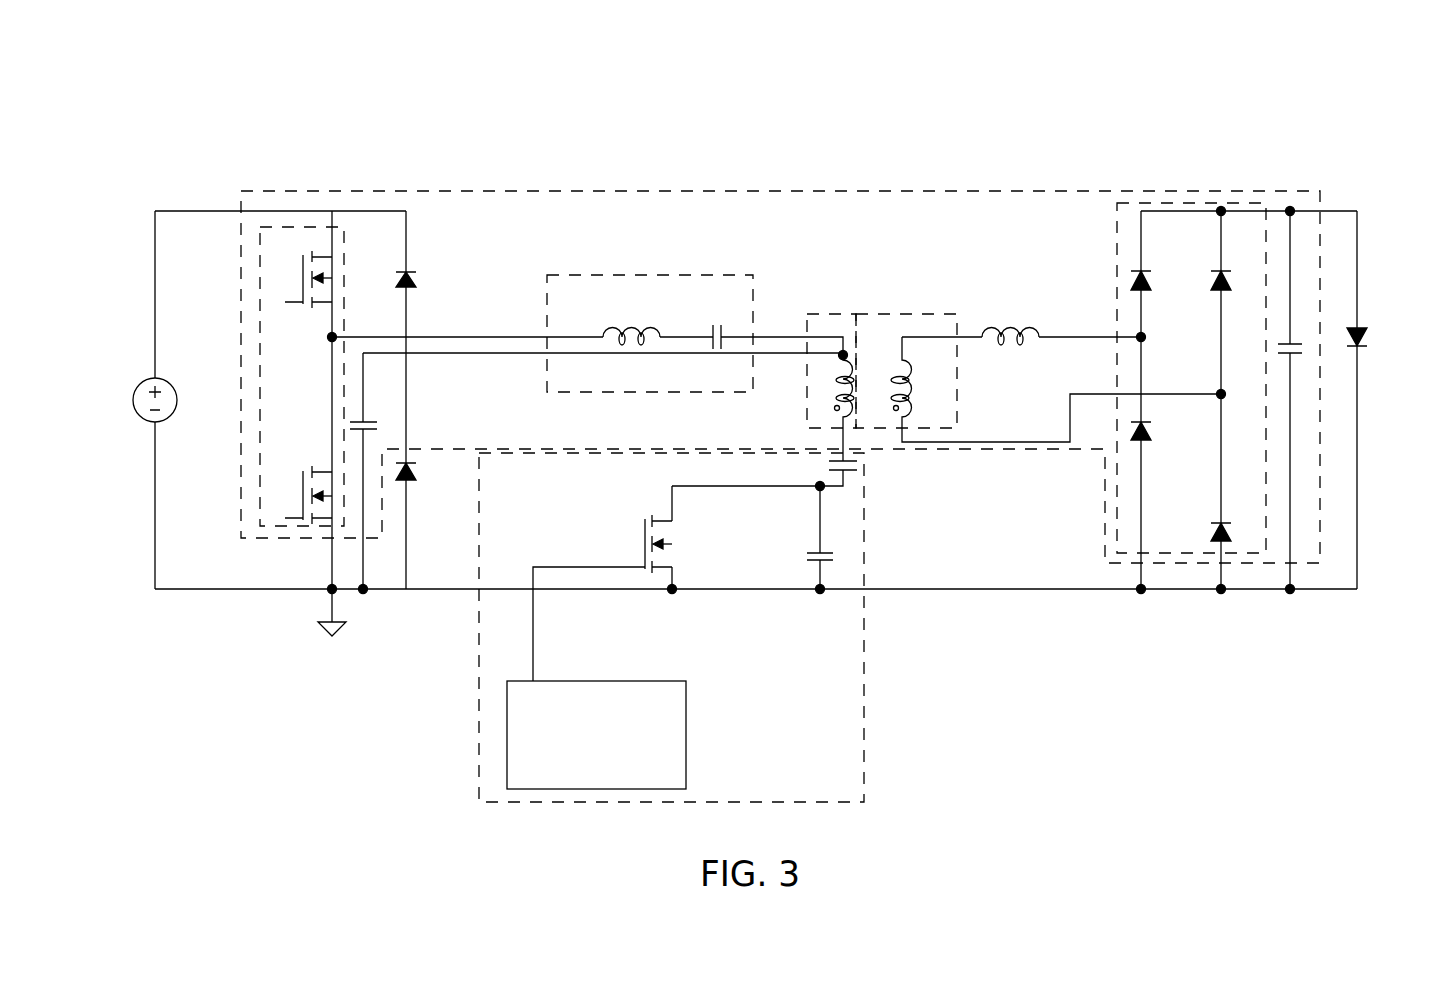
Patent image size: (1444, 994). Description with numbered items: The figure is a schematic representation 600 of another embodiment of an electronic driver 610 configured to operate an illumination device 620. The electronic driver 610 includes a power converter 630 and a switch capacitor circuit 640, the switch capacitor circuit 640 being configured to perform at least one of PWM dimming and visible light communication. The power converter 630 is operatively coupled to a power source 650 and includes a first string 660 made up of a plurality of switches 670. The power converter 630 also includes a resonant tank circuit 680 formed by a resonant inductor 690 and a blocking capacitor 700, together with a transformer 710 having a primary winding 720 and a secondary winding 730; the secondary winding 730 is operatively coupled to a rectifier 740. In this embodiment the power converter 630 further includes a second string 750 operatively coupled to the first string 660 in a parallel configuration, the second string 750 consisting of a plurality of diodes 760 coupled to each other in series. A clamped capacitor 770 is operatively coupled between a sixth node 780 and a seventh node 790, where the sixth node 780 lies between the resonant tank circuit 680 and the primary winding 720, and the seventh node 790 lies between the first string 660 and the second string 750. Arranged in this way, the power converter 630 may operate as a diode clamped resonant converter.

The schematic representation 600 is at (938, 118).
The electronic driver 610 is at (212, 175).
The illumination device 620 is at (1362, 328).
The power converter 630 is at (425, 190).
The switch capacitor circuit 640 is at (864, 714).
The power source 650 is at (170, 382).
The first string 660 is at (273, 227).
The switches 670 is at (330, 397).
The resonant tank circuit 680 is at (617, 275).
The resonant inductor 690 is at (617, 325).
The blocking capacitor 700 is at (712, 328).
The transformer 710 is at (947, 313).
The primary winding 720 is at (837, 396).
The secondary winding 730 is at (903, 382).
The rectifier 740 is at (1116, 224).
The second string 750 is at (408, 238).
The diodes 760 is at (417, 280).
The clamped capacitor 770 is at (376, 415).
The sixth node 780 is at (848, 346).
The seventh node 790 is at (365, 595).